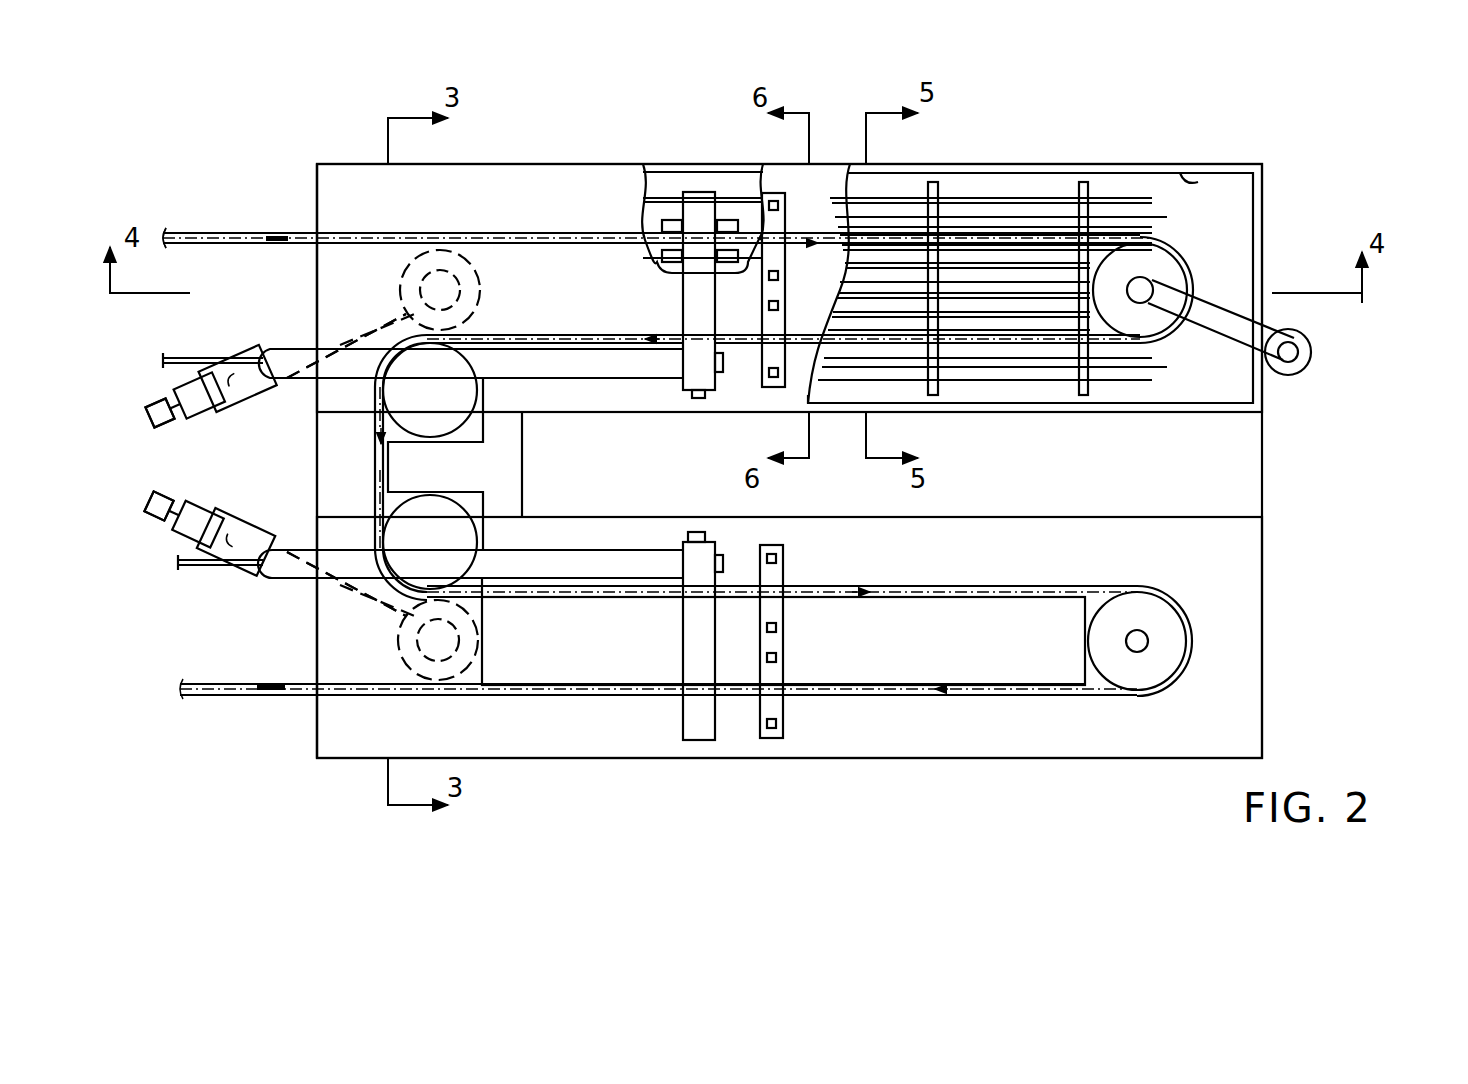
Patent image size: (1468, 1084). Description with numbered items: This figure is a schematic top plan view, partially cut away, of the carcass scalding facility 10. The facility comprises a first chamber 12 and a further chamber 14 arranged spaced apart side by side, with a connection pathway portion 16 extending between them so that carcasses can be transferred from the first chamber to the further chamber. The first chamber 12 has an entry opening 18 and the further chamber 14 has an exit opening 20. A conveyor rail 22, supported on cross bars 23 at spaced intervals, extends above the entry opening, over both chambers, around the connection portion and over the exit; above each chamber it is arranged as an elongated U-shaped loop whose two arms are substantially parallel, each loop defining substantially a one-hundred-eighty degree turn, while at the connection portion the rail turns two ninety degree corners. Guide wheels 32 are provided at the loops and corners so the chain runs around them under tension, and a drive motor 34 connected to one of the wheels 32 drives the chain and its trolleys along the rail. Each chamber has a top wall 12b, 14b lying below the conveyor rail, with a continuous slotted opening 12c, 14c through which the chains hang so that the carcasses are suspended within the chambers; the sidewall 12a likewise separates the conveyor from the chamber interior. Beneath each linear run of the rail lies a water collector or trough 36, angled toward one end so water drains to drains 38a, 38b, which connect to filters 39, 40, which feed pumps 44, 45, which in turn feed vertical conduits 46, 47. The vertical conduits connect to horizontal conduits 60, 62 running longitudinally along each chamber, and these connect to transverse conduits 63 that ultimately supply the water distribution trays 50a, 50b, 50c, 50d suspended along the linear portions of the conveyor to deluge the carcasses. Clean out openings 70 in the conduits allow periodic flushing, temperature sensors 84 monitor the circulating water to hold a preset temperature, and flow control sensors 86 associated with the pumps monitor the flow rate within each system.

The facility 10 is at (1368, 342).
The first chamber 12 is at (1305, 240).
The sidewall 12a is at (1047, 170).
The top wall 12b is at (598, 180).
The slotted opening 12c is at (527, 205).
The further chamber 14 is at (1322, 554).
The top wall 14b is at (602, 737).
The slotted opening 14c is at (525, 697).
The connection pathway portion 16 is at (327, 470).
The entry opening 18 is at (295, 252).
The exit opening 20 is at (296, 708).
The conveyor rail 22 is at (212, 232).
The cross bars 23 is at (922, 185).
The guide wheels 32 is at (453, 520).
The drive motor 34 is at (1303, 365).
The water collector or trough 36 is at (1198, 182).
The drain 38a is at (440, 268).
The drain 38b is at (458, 655).
The filter 39 is at (482, 290).
The filter 40 is at (478, 622).
The pump 44 is at (228, 397).
The pump 45 is at (212, 502).
The vertical conduit 46 is at (268, 350).
The vertical conduit 47 is at (277, 572).
The water distribution tray 50a is at (1125, 190).
The water distribution tray 50b is at (993, 253).
The water distribution tray 50c is at (1033, 323).
The water distribution tray 50d is at (1133, 383).
The horizontal conduit 60 is at (352, 360).
The horizontal conduit 62 is at (335, 545).
The transverse conduit 63 is at (693, 292).
The clean out opening 70 is at (725, 555).
The temperature sensor 84 is at (180, 356).
The flow control sensor 86 is at (150, 400).